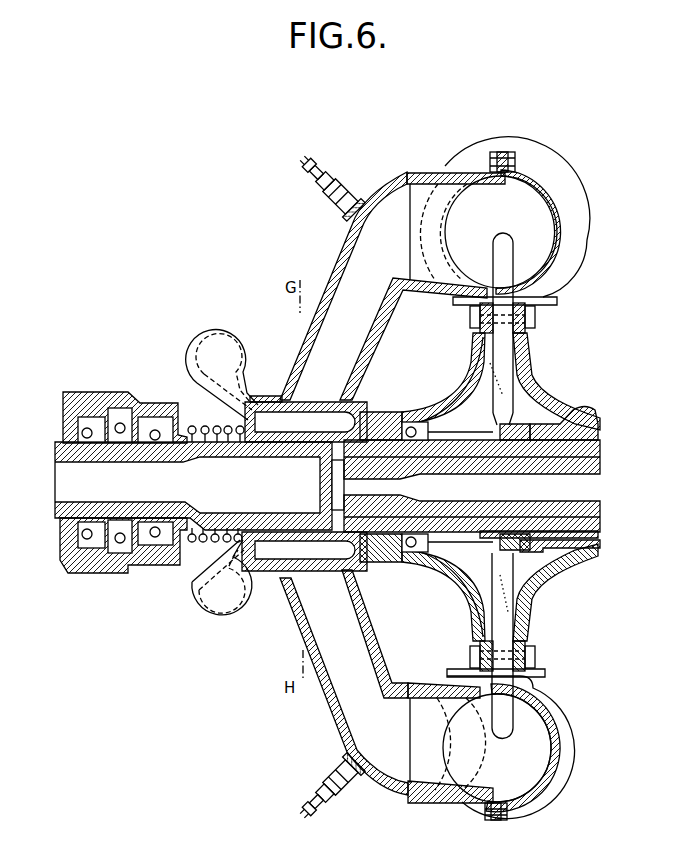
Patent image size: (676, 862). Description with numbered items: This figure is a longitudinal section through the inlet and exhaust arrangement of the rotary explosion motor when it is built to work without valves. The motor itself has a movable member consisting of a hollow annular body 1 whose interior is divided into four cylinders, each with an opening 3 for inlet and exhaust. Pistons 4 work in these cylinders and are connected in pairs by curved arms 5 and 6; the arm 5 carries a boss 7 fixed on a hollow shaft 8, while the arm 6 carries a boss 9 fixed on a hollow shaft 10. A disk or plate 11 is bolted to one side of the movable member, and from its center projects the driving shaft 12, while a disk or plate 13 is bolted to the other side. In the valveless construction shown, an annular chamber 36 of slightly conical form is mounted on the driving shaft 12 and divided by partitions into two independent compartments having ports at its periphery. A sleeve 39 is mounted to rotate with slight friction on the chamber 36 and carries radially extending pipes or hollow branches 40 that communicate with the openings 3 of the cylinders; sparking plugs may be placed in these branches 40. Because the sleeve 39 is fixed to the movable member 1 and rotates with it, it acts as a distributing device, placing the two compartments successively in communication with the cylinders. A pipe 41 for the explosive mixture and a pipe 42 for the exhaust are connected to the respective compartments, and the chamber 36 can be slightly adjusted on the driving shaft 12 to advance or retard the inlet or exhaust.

The hollow annular body 1 is at (551, 201).
The opening 3 is at (446, 203).
The piston 4 is at (549, 752).
The curved arm 5 is at (508, 243).
The curved arm 6 is at (507, 733).
The boss 7 is at (467, 452).
The hollow shaft 8 is at (478, 513).
The boss 9 is at (564, 412).
The hollow shaft 10 is at (590, 534).
The disk or plate 11 is at (472, 364).
The driving shaft 12 is at (152, 512).
The disk or plate 13 is at (527, 362).
The annular chamber 36 is at (303, 568).
The sleeve 39 is at (268, 568).
The radially extending pipe or hollow branch 40 is at (383, 487).
The pipe for the explosive mixture 41 is at (222, 375).
The pipe for the exhaust 42 is at (222, 577).